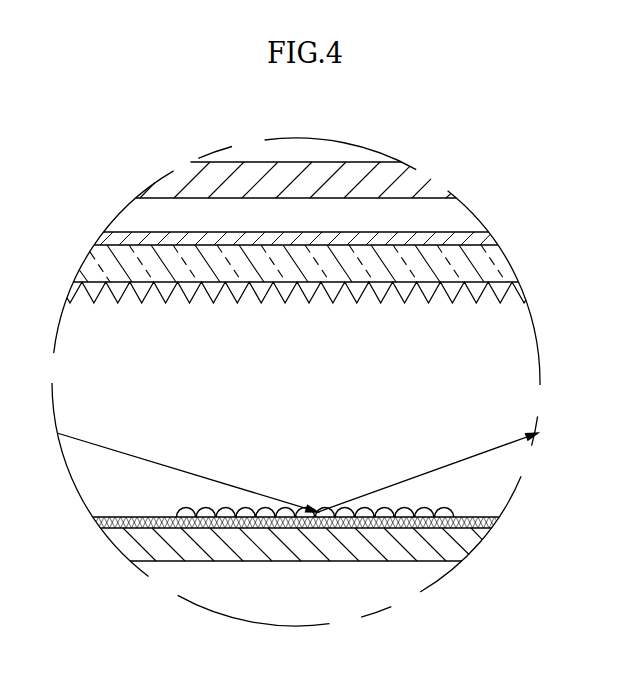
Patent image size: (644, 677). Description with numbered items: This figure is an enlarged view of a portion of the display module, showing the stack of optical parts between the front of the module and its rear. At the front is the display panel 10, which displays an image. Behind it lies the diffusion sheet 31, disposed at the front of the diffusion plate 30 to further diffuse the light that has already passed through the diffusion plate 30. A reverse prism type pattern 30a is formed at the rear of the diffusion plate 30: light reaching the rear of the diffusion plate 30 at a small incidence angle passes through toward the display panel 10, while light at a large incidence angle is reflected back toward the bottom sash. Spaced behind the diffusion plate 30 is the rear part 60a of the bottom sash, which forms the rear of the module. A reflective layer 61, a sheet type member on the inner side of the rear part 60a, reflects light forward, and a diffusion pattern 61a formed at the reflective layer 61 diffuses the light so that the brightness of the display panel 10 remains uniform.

The display panel 10 is at (342, 150).
The diffusion sheet 31 is at (443, 232).
The diffusion plate 30 is at (510, 266).
The reverse prism type pattern 30a is at (450, 300).
The reflective layer 61 is at (132, 517).
The diffusion pattern 61a is at (325, 511).
The rear part 60a is at (200, 548).